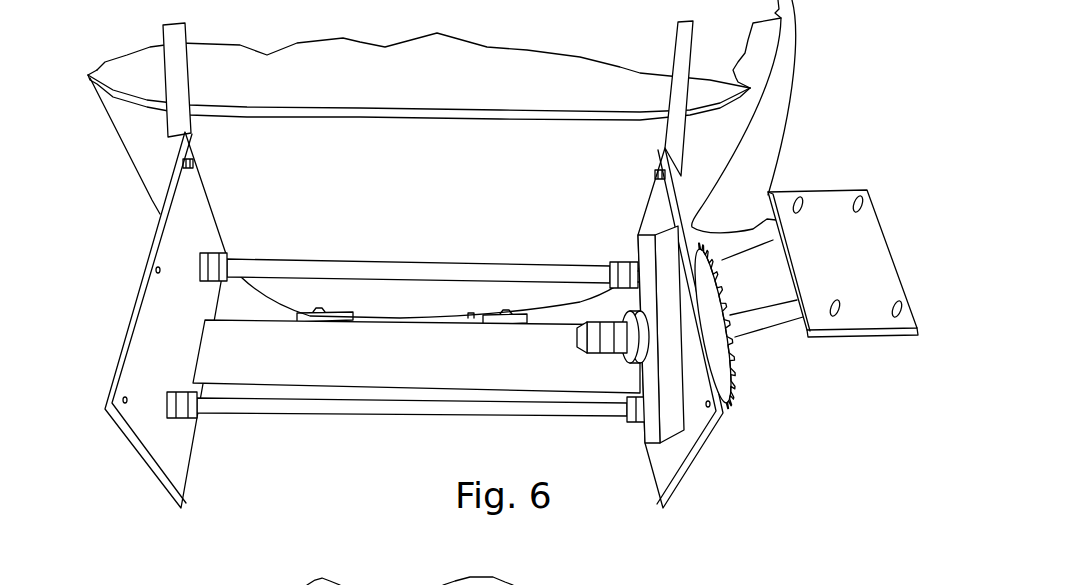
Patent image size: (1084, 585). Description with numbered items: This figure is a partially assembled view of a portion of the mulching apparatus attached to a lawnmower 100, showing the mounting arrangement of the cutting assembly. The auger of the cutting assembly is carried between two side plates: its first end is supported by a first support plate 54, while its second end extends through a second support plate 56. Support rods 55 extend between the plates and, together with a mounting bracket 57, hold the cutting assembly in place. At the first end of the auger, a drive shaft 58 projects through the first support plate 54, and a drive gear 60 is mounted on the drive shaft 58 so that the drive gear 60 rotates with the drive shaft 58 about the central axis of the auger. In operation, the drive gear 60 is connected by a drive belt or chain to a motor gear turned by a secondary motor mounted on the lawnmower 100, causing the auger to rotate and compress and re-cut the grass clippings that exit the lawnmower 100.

The lawnmower 100 is at (752, 162).
The first support plate 54 is at (693, 438).
The support rods 55 is at (371, 405).
The second support plate 56 is at (153, 432).
The mounting bracket 57 is at (285, 373).
The drive shaft 58 is at (610, 342).
The drive gear 60 is at (716, 333).